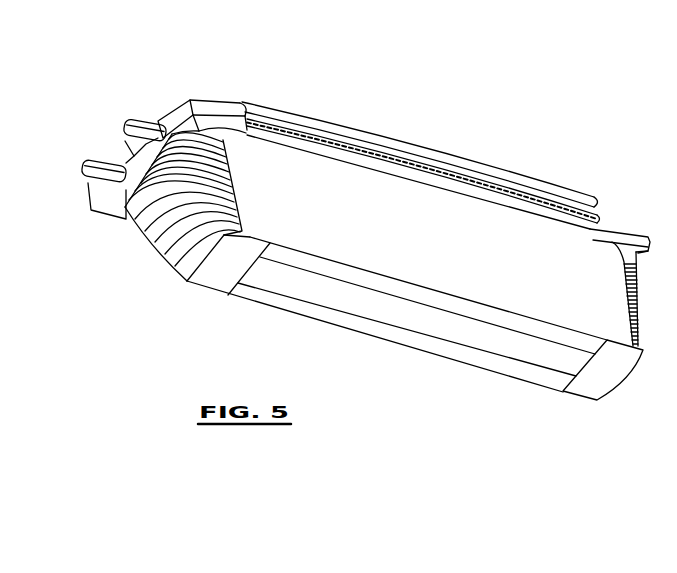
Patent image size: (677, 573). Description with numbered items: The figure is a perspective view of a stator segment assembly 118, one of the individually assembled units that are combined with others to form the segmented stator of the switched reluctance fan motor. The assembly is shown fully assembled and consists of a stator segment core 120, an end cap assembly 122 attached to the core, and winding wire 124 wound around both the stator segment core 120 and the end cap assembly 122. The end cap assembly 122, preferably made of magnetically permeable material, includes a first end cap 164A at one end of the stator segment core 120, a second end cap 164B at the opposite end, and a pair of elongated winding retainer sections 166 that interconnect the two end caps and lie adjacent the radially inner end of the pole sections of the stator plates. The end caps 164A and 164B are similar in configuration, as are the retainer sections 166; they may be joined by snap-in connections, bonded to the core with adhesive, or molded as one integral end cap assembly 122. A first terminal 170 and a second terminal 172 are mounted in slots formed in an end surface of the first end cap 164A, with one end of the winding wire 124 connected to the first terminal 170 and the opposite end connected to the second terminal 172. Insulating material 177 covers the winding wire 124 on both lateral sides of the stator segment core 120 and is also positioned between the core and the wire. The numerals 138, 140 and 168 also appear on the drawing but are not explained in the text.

The stator segment assembly 118 is at (420, 152).
The stator segment core 120 is at (364, 120).
The end cap assembly 122 is at (156, 139).
The winding wire 124 is at (135, 243).
The slot 138 is at (299, 118).
The rail end 140 is at (553, 188).
The first end cap 164A is at (210, 101).
The second end cap 164B is at (631, 233).
The winding retainer section 166 is at (213, 282).
The end block 168 is at (588, 390).
The first terminal 170 is at (82, 170).
The second terminal 172 is at (131, 121).
The insulating material 177 is at (356, 207).